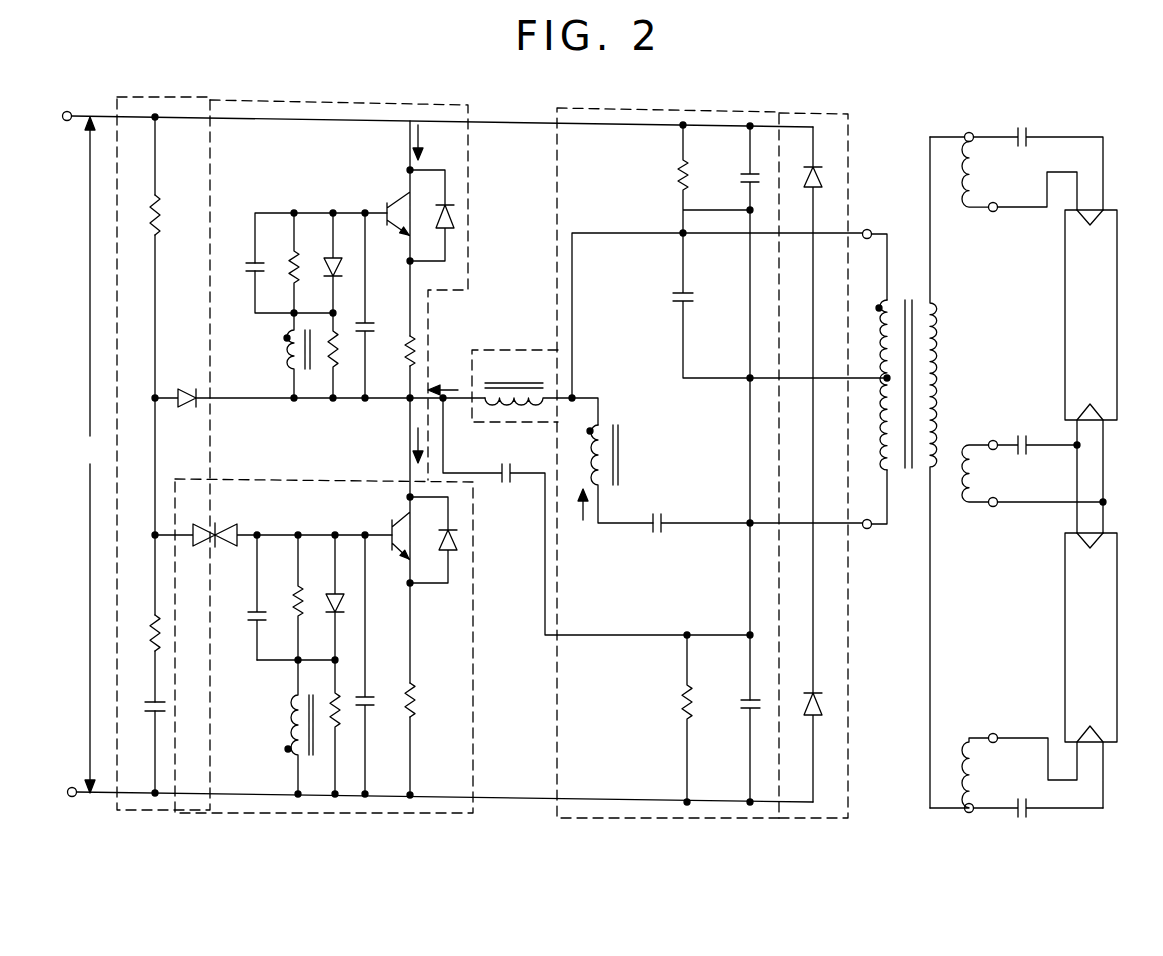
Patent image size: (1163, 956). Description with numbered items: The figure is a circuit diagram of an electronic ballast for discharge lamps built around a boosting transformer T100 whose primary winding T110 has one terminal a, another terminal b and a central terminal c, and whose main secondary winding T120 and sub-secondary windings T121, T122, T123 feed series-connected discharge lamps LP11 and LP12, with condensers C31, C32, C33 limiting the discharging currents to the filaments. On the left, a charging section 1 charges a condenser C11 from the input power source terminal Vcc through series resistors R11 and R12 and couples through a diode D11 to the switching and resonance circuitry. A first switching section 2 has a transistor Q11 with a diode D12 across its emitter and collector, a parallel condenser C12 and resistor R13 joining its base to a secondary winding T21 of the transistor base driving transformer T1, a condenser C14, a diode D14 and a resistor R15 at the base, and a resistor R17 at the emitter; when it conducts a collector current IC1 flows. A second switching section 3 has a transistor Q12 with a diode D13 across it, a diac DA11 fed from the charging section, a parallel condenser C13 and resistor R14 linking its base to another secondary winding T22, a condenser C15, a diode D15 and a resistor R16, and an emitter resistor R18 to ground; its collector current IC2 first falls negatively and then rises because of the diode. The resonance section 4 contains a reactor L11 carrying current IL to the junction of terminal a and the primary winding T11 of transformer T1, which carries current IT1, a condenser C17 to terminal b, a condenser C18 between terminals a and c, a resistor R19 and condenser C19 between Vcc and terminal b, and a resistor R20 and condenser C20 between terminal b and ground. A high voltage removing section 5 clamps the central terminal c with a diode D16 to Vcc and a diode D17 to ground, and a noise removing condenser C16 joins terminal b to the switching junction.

The charging section 1 is at (170, 96).
The first switching section 2 is at (322, 103).
The second switching section 3 is at (473, 699).
The resonance section 4 is at (655, 110).
The high voltage removing section 5 is at (812, 113).
The input power source terminal Vcc is at (89, 455).
The resistor R11 is at (174, 215).
The resistor R12 is at (140, 634).
The condenser C11 is at (142, 717).
The diode D11 is at (321, 389).
The condenser C12 is at (269, 255).
The resistor R13 is at (310, 263).
The diode D14 is at (346, 263).
The secondary winding T21 is at (279, 355).
The resistor R15 is at (346, 355).
The condenser C14 is at (380, 305).
The resistor R17 is at (394, 351).
The transistor Q11 is at (388, 259).
The diode D12 is at (429, 215).
The collector current IC1 is at (432, 142).
The current through the reactor IL is at (443, 382).
The diac DA11 is at (275, 526).
The condenser C13 is at (242, 597).
The resistor R14 is at (282, 597).
The diode D15 is at (323, 597).
The secondary winding T22 is at (282, 727).
The resistor R16 is at (350, 727).
The condenser C15 is at (381, 664).
The resistor R18 is at (431, 697).
The transistor Q12 is at (386, 596).
The diode D13 is at (431, 540).
The collector current IC2 is at (393, 445).
The noise removing condenser C16 is at (596, 516).
The reactor L11 is at (541, 392).
The transistor base driving transformer T1 is at (633, 455).
The primary winding T11 is at (607, 474).
The current through the primary winding IT1 is at (583, 520).
The condenser C17 is at (752, 512).
The resistor R19 is at (691, 179).
The condenser C19 is at (728, 413).
The condenser C18 is at (780, 305).
The resistor R20 is at (661, 718).
The condenser C20 is at (731, 750).
The diode D16 is at (825, 410).
The diode D17 is at (803, 736).
The one terminal a is at (871, 265).
The other terminal b is at (872, 499).
The central terminal c is at (878, 389).
The boosting transformer T100 is at (914, 371).
The primary winding T110 is at (867, 385).
The main secondary winding T120 is at (958, 472).
The condenser C31 is at (1016, 158).
The sub-secondary winding T121 is at (1019, 172).
The discharge lamp LP11 is at (1091, 371).
The condenser C32 is at (1035, 435).
The sub-secondary winding T122 is at (1034, 476).
The discharge lamp LP12 is at (1058, 670).
The sub-secondary winding T123 is at (993, 773).
The condenser C33 is at (1016, 801).